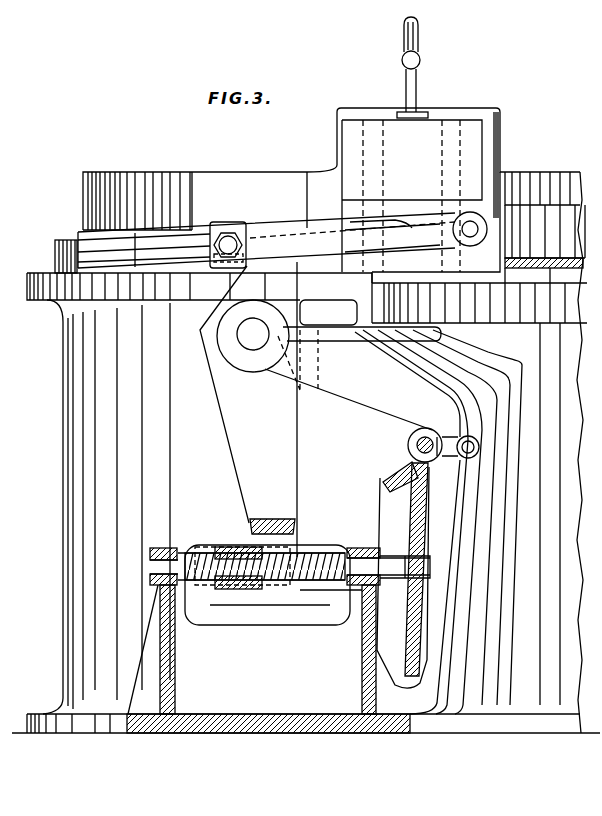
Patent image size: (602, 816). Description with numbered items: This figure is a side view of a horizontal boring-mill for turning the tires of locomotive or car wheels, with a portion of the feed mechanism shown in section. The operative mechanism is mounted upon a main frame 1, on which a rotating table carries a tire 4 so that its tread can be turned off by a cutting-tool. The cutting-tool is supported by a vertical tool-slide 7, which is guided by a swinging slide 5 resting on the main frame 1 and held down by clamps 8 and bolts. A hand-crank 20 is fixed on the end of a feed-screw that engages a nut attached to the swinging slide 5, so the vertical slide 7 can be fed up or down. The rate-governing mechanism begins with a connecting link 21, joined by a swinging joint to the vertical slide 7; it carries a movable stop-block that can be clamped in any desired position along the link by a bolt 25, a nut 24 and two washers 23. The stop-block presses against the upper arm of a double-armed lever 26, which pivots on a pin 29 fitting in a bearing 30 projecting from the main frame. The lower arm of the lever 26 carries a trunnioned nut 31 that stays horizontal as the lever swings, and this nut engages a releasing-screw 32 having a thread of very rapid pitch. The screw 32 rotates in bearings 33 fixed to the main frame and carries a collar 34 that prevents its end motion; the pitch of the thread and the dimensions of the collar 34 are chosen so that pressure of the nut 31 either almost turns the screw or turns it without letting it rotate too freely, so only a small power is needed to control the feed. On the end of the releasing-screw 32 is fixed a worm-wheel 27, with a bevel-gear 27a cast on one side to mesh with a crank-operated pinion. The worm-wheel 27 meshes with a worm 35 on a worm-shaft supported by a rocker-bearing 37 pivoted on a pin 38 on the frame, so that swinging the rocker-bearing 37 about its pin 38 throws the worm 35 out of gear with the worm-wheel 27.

The main frame 1 is at (306, 710).
The tire 4 is at (545, 236).
The swinging slide 5 is at (331, 157).
The vertical tool-slide 7 is at (421, 197).
The clamps 8 is at (66, 244).
The hand-crank 20 is at (423, 64).
The connecting link 21 is at (185, 280).
The washers 23 is at (239, 232).
The nut 24 is at (260, 238).
The bolt 25 is at (222, 230).
The double-armed lever 26 is at (248, 395).
The worm-wheel 27 is at (417, 562).
The bevel-gear 27a is at (383, 485).
The pin 29 is at (253, 336).
The bearing 30 is at (338, 378).
The nut 31 is at (267, 585).
The releasing-screw 32 is at (261, 549).
The bearings 33 is at (165, 545).
The collar 34 is at (385, 553).
The worm 35 is at (408, 441).
The rocker-bearing 37 is at (437, 437).
The pin 38 is at (468, 447).